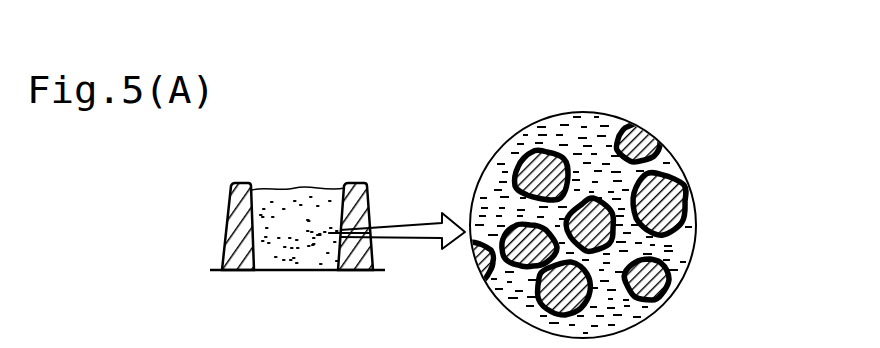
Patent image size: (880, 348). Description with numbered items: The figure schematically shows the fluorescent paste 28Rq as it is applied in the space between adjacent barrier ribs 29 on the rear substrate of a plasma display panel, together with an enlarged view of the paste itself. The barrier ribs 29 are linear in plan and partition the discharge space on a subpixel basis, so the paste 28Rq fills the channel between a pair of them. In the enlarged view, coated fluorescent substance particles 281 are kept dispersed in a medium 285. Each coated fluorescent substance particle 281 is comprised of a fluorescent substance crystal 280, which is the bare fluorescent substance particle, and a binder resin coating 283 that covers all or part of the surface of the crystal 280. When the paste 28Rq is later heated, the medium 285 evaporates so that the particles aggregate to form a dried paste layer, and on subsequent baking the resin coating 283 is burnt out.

The fluorescent paste 28Rq is at (280, 192).
The barrier ribs 29 is at (243, 262).
The fluorescent substance crystal 280 is at (532, 147).
The coated fluorescent substance particles 281 is at (632, 157).
The binder resin coating 283 is at (572, 62).
The medium 285 is at (480, 195).